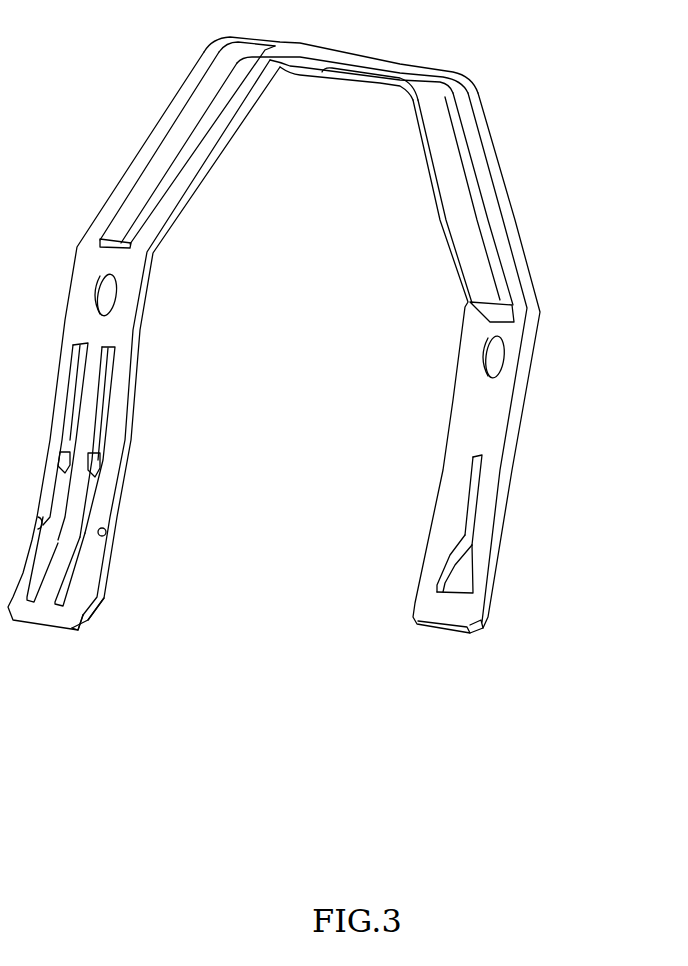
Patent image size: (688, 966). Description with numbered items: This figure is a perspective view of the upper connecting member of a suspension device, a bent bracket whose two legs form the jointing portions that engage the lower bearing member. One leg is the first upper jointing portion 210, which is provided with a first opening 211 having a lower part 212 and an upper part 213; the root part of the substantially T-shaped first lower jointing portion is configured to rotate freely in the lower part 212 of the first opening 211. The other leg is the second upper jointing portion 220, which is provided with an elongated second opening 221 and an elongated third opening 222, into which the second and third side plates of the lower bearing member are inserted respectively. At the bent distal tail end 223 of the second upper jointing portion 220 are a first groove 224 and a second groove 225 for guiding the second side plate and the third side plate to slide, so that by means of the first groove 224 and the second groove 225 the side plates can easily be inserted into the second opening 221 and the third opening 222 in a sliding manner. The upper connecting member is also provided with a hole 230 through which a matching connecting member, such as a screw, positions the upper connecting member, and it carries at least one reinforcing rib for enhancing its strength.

The hole 230 is at (359, 66).
The first upper jointing portion 210 is at (498, 450).
The first opening 211 is at (468, 553).
The lower part 212 is at (465, 580).
The upper part 213 is at (477, 491).
The second upper jointing portion 220 is at (118, 392).
The second opening 221 is at (81, 432).
The third opening 222 is at (122, 355).
The bent distal tail end 223 is at (93, 603).
The first groove 224 is at (60, 535).
The second groove 225 is at (84, 565).